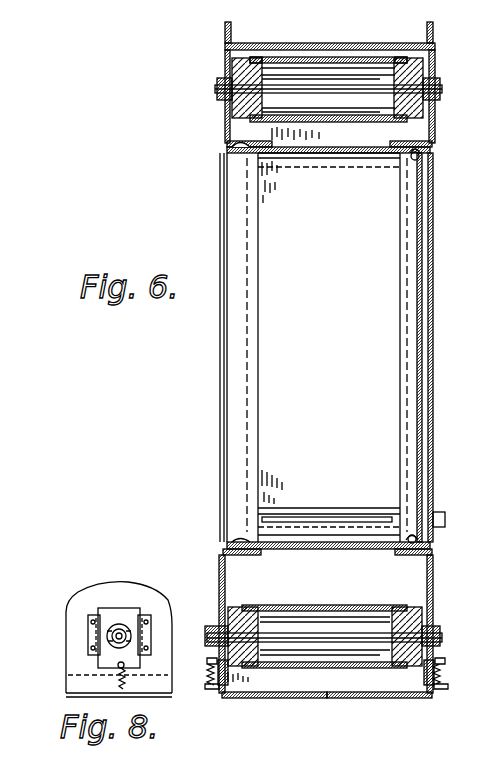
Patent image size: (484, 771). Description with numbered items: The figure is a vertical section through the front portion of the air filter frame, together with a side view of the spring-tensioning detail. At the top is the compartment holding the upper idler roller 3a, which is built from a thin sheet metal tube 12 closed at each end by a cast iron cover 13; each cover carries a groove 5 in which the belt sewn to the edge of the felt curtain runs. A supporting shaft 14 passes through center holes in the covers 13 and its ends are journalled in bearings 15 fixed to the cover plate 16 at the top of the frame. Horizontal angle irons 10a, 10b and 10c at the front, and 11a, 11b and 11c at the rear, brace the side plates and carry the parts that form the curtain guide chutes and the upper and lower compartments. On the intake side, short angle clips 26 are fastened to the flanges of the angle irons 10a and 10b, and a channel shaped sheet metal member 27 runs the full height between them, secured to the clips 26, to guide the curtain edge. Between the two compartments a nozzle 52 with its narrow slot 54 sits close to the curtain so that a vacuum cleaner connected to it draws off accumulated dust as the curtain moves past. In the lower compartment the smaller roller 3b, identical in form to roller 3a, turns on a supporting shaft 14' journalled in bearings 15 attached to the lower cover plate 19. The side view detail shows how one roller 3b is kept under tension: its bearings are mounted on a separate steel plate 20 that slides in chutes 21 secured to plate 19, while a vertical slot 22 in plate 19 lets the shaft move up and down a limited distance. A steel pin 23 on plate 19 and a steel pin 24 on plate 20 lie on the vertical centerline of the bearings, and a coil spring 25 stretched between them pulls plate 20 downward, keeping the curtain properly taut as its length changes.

In FIG. 6, the roller 3a is at (366, 124).
In FIG. 6, the roller 3b is at (323, 614).
In FIG. 6, the groove 5 is at (251, 57).
In FIG. 6, the angle iron 10a is at (432, 145).
In FIG. 6, the angle iron 10b is at (433, 548).
In FIG. 6, the angle iron 10c is at (424, 684).
In FIG. 6, the angle iron 11a is at (228, 147).
In FIG. 6, the angle iron 11b is at (242, 548).
In FIG. 6, the angle iron 11c is at (242, 688).
In FIG. 6, the sheet metal tube 12 is at (332, 60).
In FIG. 6, the cast iron cover 13 is at (232, 66).
In FIG. 6, the supporting shaft 14 is at (328, 52).
In FIG. 6, the supporting shaft 14' is at (324, 663).
In FIG. 6, the bearing 15 is at (217, 86).
In FIG. 6, the cover plate 16 is at (225, 108).
In FIG. 6, the cover plate 19 is at (225, 592).
In FIG. 8, the cover plate 19 is at (65, 606).
In FIG. 8, the steel plate 20 is at (118, 607).
In FIG. 8, the chute 21 is at (92, 632).
In FIG. 8, the slot 22 is at (123, 628).
In FIG. 8, the steel pin 23 is at (118, 684).
In FIG. 8, the steel pin 24 is at (117, 666).
In FIG. 8, the coil spring 25 is at (119, 690).
In FIG. 6, the angle clip 26 is at (412, 160).
In FIG. 6, the channel shaped sheet metal member 27 is at (422, 244).
In FIG. 6, the nozzle 52 is at (350, 510).
In FIG. 6, the slot 54 is at (300, 519).